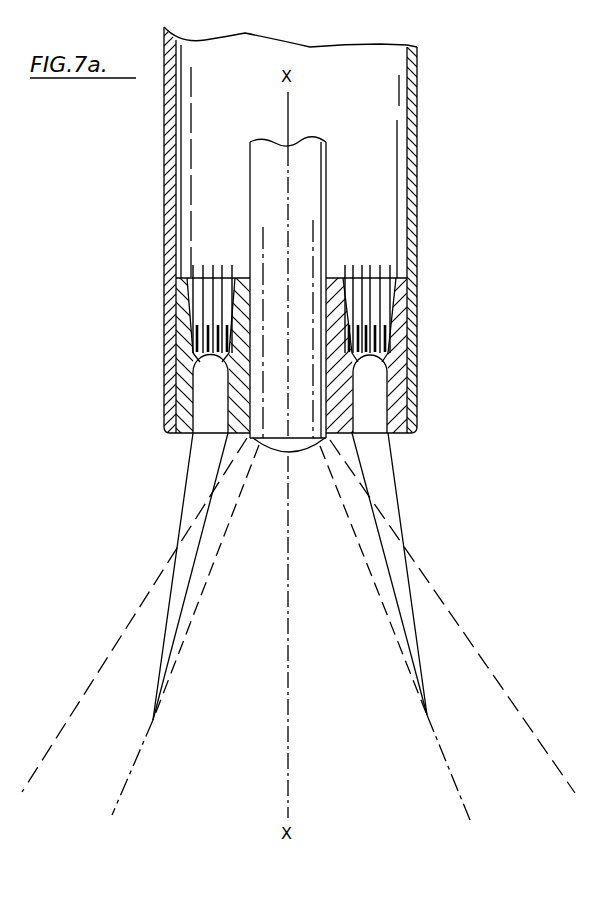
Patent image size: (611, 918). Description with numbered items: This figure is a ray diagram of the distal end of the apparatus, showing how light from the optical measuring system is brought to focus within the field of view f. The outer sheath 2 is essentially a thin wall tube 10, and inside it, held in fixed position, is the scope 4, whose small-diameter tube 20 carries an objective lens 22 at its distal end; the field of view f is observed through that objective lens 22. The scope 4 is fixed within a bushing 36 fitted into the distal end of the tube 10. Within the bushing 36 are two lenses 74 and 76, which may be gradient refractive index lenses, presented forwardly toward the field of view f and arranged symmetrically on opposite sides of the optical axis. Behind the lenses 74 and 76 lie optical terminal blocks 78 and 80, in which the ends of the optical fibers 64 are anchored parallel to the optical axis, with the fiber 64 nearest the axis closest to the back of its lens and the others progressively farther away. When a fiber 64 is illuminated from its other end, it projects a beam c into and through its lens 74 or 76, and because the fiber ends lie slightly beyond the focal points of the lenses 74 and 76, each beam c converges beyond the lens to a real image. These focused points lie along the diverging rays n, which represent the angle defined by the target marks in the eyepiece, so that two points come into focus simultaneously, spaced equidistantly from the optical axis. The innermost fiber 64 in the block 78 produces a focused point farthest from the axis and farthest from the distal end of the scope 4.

The sheath 2 is at (417, 101).
The scope 4 is at (330, 220).
The tube 10 is at (164, 124).
The tube 20 is at (250, 193).
The objective lens 22 is at (282, 451).
The bushing 36 is at (181, 408).
The optical fibers 64 is at (190, 334).
The lens 74 is at (197, 436).
The lens 76 is at (372, 412).
The optical terminal block 78 is at (195, 298).
The optical terminal block 80 is at (395, 302).
The beam c is at (187, 373).
The rays n is at (298, 636).
The field of view f is at (387, 809).